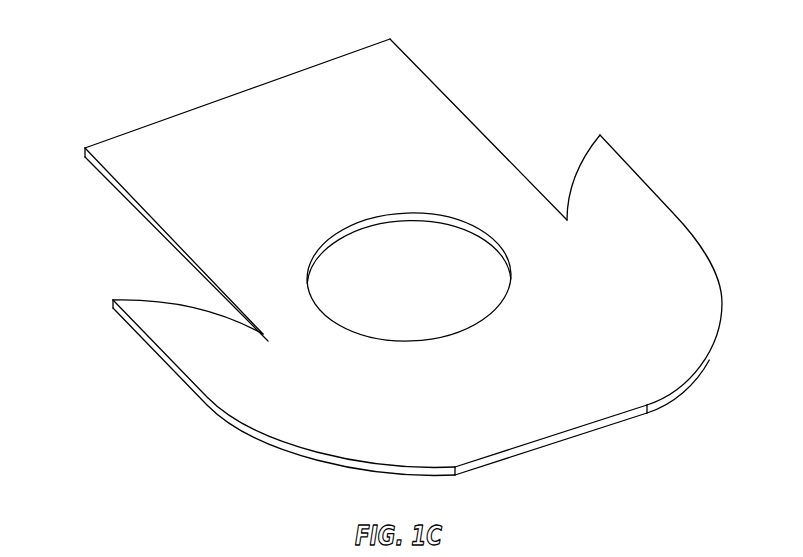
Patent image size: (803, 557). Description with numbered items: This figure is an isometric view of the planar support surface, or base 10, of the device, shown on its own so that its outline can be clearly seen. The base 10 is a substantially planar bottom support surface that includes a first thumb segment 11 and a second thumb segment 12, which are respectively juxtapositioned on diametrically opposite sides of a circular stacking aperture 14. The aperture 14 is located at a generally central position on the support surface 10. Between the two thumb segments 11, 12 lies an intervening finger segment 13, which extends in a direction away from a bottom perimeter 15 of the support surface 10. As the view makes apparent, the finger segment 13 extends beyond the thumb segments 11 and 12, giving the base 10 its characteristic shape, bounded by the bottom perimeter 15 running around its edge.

The base 10 is at (94, 54).
The first thumb segment 11 is at (222, 365).
The second thumb segment 12 is at (643, 232).
The finger segment 13 is at (245, 103).
The stacking aperture 14 is at (418, 282).
The bottom perimeter 15 is at (633, 168).